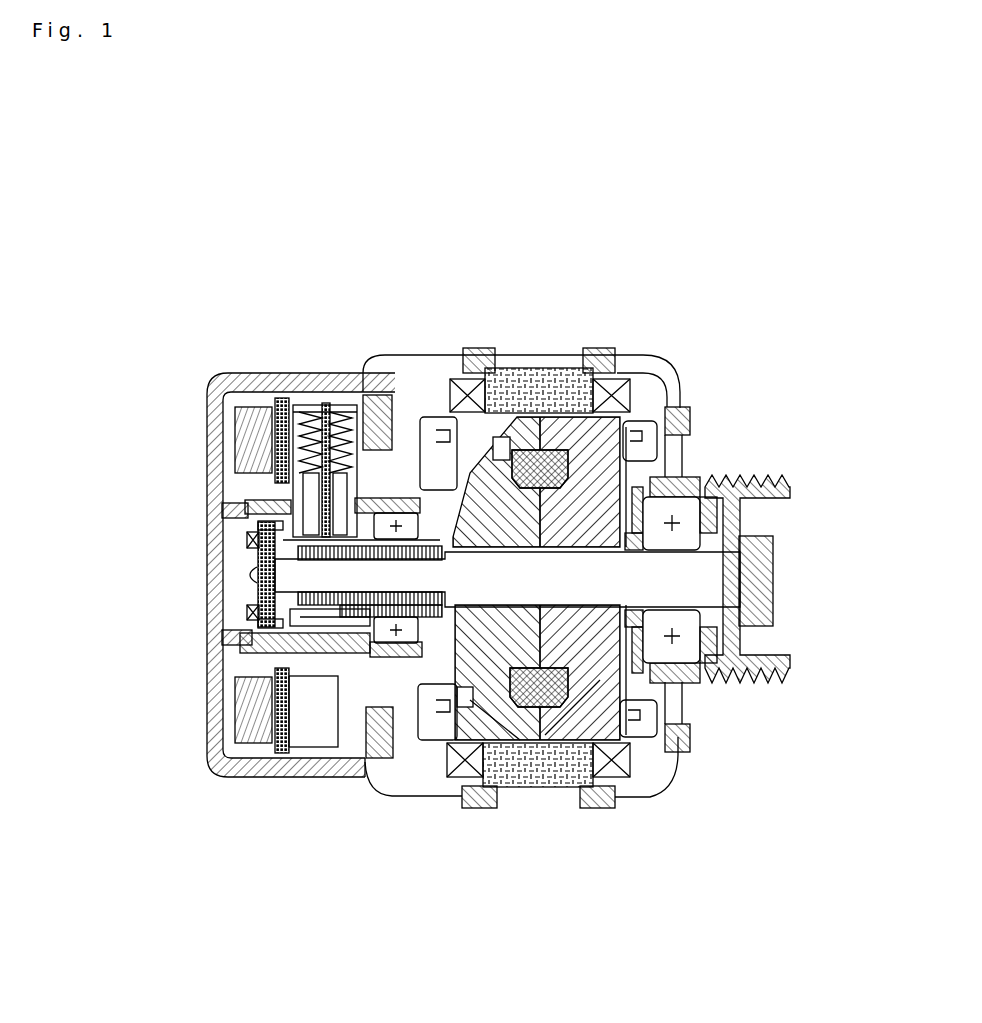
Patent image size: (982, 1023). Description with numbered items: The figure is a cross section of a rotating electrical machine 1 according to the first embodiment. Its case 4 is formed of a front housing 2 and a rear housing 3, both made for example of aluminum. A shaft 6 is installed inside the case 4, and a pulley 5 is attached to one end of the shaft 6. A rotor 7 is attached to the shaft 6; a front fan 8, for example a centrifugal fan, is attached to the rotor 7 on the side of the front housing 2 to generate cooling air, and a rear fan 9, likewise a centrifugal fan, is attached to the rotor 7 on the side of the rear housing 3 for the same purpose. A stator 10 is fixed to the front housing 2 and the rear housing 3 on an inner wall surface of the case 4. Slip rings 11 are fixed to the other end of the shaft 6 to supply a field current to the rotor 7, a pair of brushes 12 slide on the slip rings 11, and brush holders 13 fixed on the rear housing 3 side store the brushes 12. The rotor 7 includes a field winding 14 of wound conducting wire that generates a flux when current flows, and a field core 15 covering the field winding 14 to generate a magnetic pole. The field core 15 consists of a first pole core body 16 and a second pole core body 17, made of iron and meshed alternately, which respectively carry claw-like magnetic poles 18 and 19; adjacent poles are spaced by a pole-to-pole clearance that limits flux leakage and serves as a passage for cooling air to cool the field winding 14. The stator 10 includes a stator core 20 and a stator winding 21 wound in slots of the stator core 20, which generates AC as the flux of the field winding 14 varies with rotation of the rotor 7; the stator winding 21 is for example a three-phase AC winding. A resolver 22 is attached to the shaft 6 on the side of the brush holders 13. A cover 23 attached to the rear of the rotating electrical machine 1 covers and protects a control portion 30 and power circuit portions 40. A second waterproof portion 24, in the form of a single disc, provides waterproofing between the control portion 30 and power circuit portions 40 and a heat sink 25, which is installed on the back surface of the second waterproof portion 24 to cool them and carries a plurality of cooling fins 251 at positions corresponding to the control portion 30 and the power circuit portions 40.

The rotating electrical machine 1 is at (138, 337).
The front housing 2 is at (602, 348).
The rear housing 3 is at (487, 365).
The case 4 is at (690, 740).
The pulley 5 is at (790, 475).
The shaft 6 is at (707, 582).
The rotor 7 is at (690, 695).
The front fan 8 is at (648, 431).
The rear fan 9 is at (438, 417).
The stator 10 is at (545, 428).
The slip rings 11 is at (378, 555).
The brushes 12 is at (352, 445).
The brush holders 13 is at (342, 497).
The field winding 14 is at (543, 457).
The field core 15 is at (588, 442).
The first pole core body 16 is at (490, 735).
The second pole core body 17 is at (568, 723).
The claw-like magnetic poles 18 is at (505, 437).
The claw-like magnetic poles 19 is at (523, 440).
The stator core 20 is at (566, 378).
The stator winding 21 is at (627, 393).
The resolver 22 is at (250, 637).
The cover 23 is at (207, 483).
The second waterproof portion 24 is at (272, 412).
The heat sink 25 is at (281, 398).
The control portion 30 is at (247, 412).
The power circuit portions 40 is at (240, 708).
The cooling fins 251 is at (315, 720).